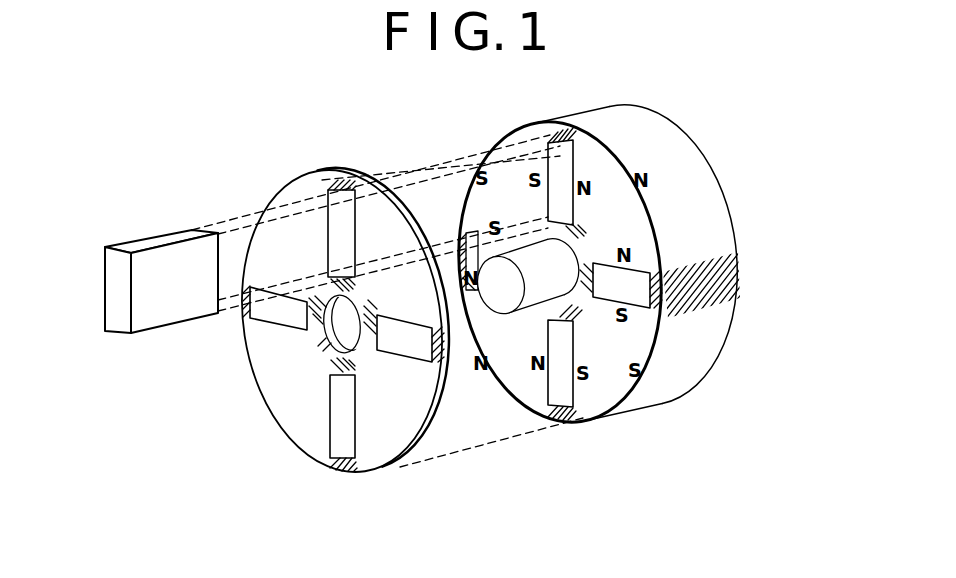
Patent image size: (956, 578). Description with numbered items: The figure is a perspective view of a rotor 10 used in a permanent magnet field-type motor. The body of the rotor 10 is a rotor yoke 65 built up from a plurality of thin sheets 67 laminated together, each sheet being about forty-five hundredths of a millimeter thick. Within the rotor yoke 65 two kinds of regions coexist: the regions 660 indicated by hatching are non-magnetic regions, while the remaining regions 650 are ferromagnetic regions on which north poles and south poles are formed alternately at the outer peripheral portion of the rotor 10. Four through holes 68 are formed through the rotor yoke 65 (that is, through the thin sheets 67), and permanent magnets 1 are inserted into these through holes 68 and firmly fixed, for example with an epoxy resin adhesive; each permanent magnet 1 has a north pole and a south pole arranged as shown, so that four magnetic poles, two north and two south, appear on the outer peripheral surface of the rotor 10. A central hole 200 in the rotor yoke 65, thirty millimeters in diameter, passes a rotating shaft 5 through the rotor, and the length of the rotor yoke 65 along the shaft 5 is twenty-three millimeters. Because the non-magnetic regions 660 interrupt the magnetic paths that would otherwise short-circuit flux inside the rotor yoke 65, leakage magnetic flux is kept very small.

The permanent magnet 1 is at (176, 252).
The rotating shaft 5 is at (528, 303).
The rotor 10 is at (663, 112).
The rotor yoke 65 is at (675, 163).
The ferromagnetic region 650 is at (705, 198).
The non-magnetic region 660 is at (698, 296).
The through hole 68 is at (548, 150).
The thin sheet 67 is at (290, 441).
The central hole 200 is at (338, 333).